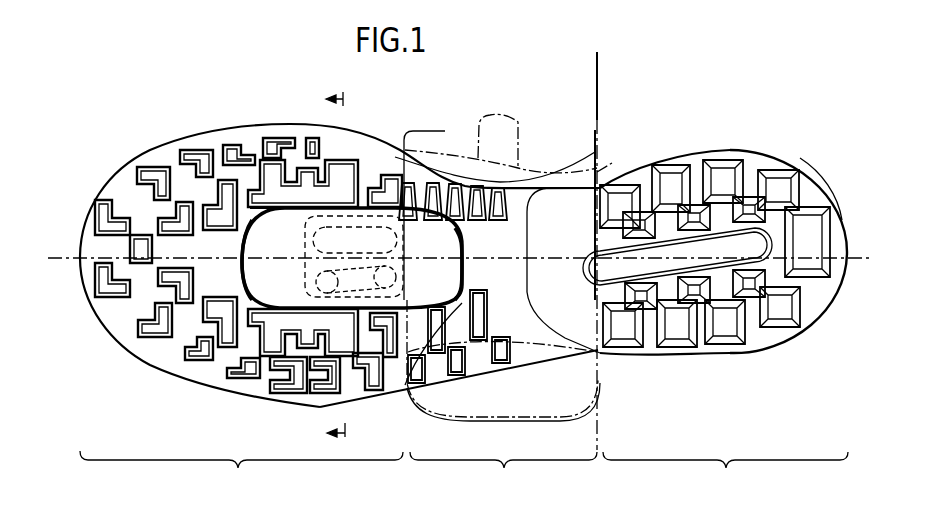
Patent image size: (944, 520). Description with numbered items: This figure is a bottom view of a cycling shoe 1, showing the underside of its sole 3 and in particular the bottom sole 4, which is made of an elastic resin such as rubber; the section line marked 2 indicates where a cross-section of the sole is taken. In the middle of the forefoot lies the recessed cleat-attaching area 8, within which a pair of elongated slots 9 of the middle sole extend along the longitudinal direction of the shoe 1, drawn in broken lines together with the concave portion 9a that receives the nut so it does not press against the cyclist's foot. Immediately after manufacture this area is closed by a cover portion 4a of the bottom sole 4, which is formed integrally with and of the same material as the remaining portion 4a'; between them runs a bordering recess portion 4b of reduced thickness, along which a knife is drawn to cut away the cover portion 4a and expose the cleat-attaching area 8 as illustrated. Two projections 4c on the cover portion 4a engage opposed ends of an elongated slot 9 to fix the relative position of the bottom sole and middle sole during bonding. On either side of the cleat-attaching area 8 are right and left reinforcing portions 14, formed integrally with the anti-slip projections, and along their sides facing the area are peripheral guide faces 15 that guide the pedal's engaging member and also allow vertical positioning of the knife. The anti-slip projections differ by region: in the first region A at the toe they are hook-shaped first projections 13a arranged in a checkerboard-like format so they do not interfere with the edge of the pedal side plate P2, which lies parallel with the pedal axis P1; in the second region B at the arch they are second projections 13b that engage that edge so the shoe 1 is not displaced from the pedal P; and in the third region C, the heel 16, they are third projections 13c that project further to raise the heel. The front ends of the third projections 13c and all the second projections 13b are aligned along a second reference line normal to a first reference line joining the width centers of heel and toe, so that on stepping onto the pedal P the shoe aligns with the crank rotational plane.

The cycling shoe 1 is at (121, 107).
The section line 2 is at (340, 266).
The sole 3 is at (195, 132).
The bottom sole 4 is at (151, 149).
The cover portion 4a is at (322, 160).
The remaining portion 4a' is at (407, 201).
The bordering recess portion 4b is at (462, 272).
The projections 4c is at (352, 258).
The cleat-attaching area 8 is at (365, 295).
The elongated slots 9 is at (312, 240).
The concave portion 9a is at (318, 283).
The first projections 13a is at (226, 133).
The second projections 13b is at (457, 194).
The third projections 13c is at (757, 180).
The reinforcing portions 14 is at (287, 172).
The peripheral guide faces 15 is at (242, 262).
The heel 16 is at (838, 233).
The pedal P is at (550, 421).
The pedal axis P1 is at (521, 133).
The pedal side plate P2 is at (600, 177).
The first region A is at (241, 479).
The second region B is at (503, 478).
The third region C is at (725, 479).